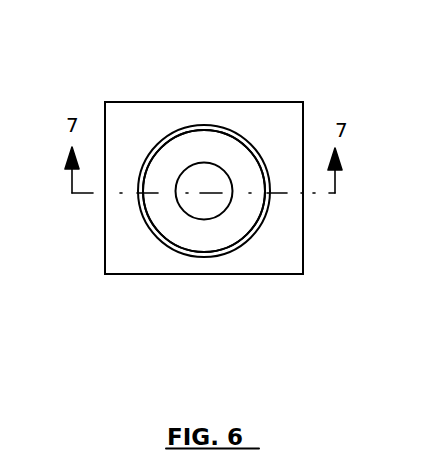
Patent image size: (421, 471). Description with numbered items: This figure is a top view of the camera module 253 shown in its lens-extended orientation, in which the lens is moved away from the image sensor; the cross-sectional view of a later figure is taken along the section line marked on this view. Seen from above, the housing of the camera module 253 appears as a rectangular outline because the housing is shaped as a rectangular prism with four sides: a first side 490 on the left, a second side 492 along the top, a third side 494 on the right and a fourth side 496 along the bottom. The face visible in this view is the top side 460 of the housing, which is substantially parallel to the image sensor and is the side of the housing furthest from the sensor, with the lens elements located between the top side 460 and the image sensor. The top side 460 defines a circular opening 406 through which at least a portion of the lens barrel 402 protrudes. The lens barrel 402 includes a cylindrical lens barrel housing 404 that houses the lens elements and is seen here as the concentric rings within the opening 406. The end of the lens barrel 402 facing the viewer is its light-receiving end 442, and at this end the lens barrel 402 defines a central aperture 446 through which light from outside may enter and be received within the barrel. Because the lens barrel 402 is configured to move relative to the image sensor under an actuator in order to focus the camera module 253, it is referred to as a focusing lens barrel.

The camera module 253 is at (286, 65).
The top side 460 is at (150, 115).
The second side 492 is at (172, 102).
The first side 490 is at (105, 257).
The third side 494 is at (303, 258).
The lens barrel housing 404 is at (133, 274).
The fourth side 496 is at (207, 274).
The lens barrel 402 is at (253, 217).
The opening 406 is at (255, 233).
The light-receiving end 442 is at (227, 145).
The aperture 446 is at (210, 172).